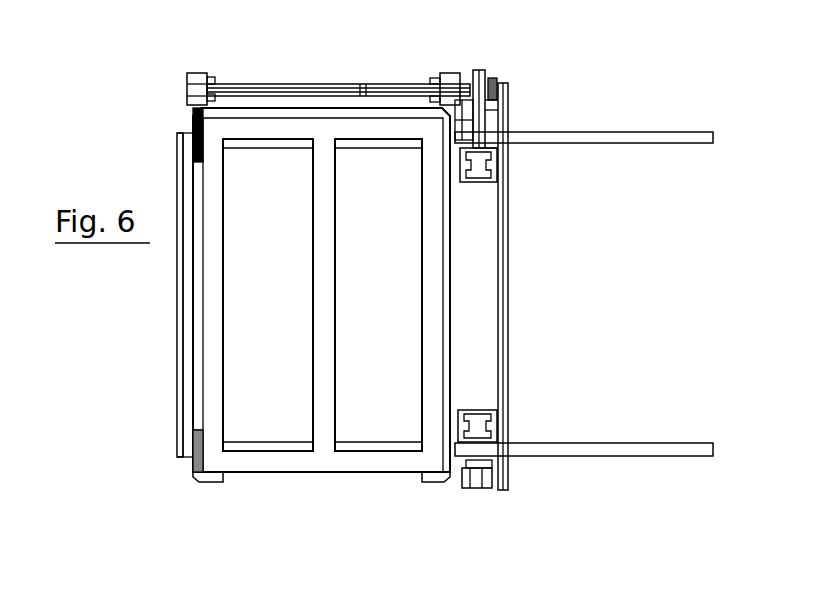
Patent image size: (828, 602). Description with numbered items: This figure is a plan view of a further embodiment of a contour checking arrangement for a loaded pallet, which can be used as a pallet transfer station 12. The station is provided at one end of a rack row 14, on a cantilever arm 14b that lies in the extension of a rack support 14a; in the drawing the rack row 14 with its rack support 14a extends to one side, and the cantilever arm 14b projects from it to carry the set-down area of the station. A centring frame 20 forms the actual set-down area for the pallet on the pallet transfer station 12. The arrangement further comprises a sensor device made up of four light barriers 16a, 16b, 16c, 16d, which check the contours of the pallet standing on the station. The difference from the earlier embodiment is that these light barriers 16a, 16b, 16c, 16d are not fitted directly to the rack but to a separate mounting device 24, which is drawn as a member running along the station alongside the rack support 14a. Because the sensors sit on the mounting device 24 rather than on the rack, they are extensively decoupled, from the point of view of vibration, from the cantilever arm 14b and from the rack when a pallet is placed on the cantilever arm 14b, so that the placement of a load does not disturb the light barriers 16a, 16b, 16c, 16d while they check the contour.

The pallet transfer station 12 is at (166, 170).
The rack row 14 is at (660, 305).
The rack support 14a is at (635, 450).
The cantilever arm 14b is at (383, 445).
The light barrier 16a is at (486, 106).
The light barrier 16b is at (447, 78).
The light barrier 16c is at (187, 98).
The light barrier 16d is at (473, 485).
The centring frame 20 is at (196, 430).
The mounting device 24 is at (287, 83).